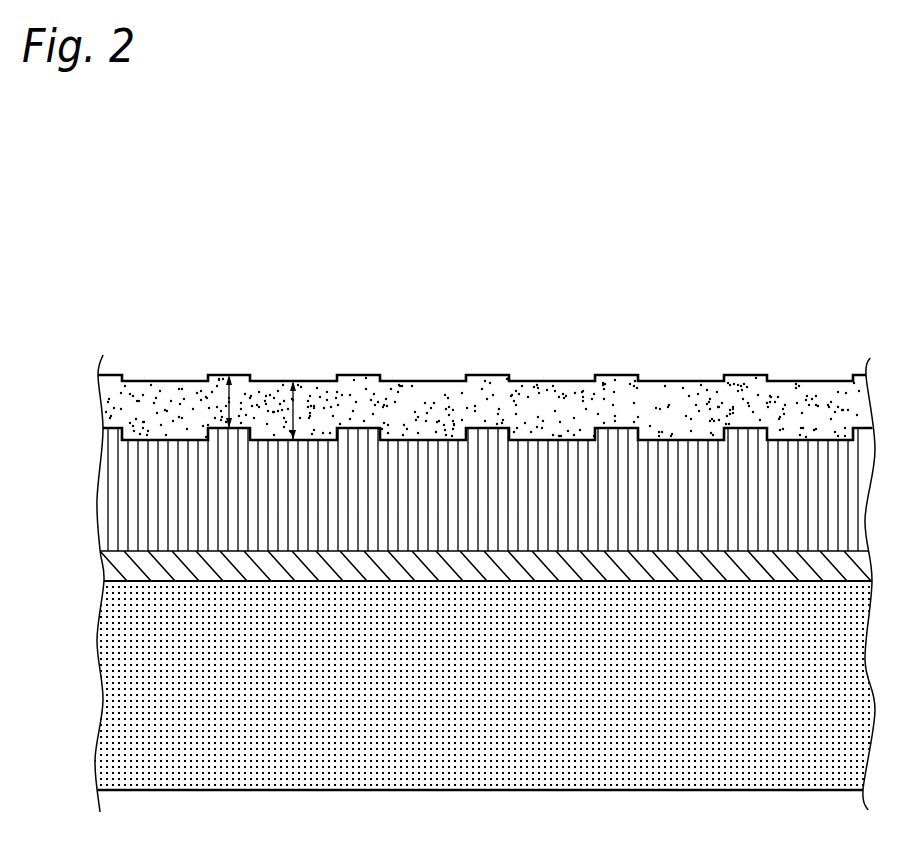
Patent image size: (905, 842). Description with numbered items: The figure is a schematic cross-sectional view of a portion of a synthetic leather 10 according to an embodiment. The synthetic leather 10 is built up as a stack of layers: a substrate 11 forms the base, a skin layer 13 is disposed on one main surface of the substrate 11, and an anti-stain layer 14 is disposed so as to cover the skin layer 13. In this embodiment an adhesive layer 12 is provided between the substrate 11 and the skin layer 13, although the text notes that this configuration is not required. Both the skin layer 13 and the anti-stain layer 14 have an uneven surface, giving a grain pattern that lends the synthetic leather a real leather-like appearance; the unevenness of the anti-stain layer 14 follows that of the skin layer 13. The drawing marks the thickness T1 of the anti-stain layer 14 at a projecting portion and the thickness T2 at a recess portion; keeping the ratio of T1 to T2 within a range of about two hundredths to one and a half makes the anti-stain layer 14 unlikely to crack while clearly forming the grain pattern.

The synthetic leather 10 is at (479, 343).
The substrate 11 is at (138, 652).
The adhesive layer 12 is at (137, 565).
The skin layer 13 is at (137, 490).
The anti-stain layer 14 is at (137, 408).
The thickness of the anti-stain layer at a projecting portion T1 is at (228, 380).
The thickness of the anti-stain layer at a recess portion T2 is at (291, 382).